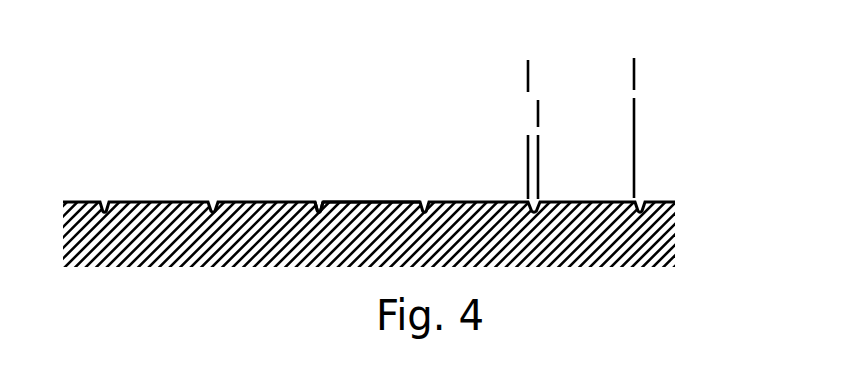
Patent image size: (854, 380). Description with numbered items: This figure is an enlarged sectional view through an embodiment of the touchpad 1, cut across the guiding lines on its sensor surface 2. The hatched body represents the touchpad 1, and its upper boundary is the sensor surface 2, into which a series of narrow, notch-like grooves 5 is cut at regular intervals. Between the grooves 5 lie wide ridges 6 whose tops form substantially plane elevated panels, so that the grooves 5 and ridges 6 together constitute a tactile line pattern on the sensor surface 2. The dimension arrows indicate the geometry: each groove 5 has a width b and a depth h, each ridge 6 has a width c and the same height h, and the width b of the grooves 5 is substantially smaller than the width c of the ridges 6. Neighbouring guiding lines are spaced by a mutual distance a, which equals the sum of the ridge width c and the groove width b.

The touchpad 1 is at (212, 245).
The sensor surface 2 is at (258, 203).
The grooves 5 is at (318, 208).
The ridges 6 is at (360, 202).
The distance between neighbouring guiding lines a is at (665, 77).
The width of the grooves b is at (568, 153).
The width of the ridges c is at (665, 115).
The depth of the grooves h is at (715, 238).